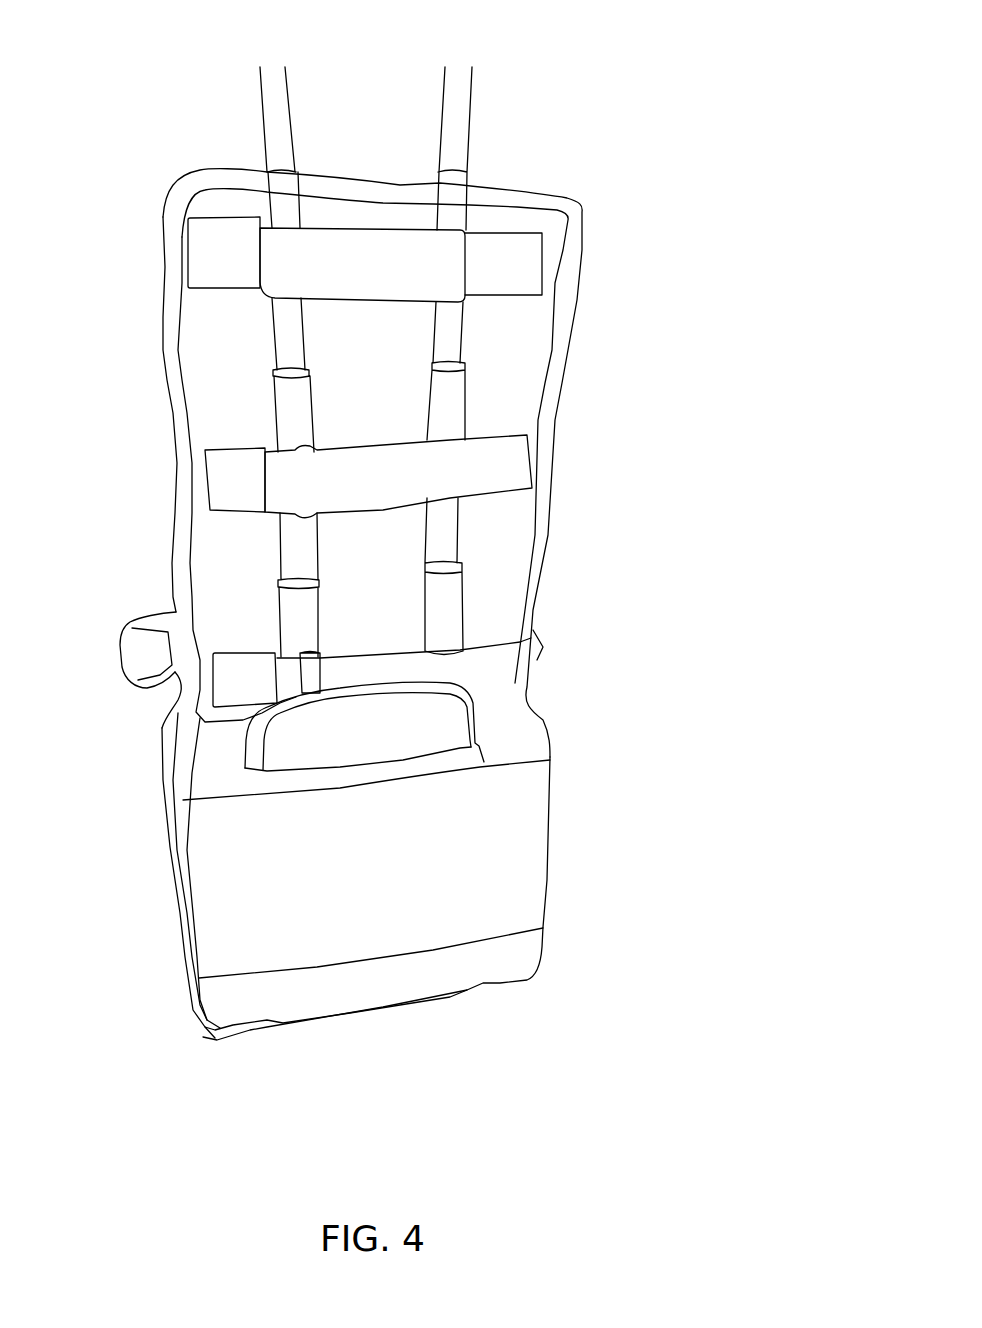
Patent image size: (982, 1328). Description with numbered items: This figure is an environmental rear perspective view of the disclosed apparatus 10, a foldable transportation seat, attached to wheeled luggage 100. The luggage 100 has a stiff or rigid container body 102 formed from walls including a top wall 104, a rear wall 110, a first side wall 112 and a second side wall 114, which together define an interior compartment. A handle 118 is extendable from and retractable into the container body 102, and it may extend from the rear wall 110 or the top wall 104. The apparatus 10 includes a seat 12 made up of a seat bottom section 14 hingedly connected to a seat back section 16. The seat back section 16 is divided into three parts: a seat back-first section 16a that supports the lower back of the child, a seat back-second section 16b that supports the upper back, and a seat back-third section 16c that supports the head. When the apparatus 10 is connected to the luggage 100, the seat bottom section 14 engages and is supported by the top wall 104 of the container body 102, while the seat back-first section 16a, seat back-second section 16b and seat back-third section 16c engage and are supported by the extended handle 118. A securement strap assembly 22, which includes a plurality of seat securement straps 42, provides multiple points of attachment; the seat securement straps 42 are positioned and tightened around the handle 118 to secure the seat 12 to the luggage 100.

The apparatus 10 is at (630, 230).
The seat 12 is at (173, 283).
The seat bottom section 14 is at (120, 627).
The seat back section 16 is at (177, 455).
The seat back-first section 16a is at (528, 608).
The seat back-second section 16b is at (553, 467).
The seat back-third section 16c is at (578, 280).
The securement strap assembly 22 is at (588, 395).
The seat securement straps 42 is at (343, 275).
The luggage 100 is at (663, 808).
The container body 102 is at (173, 843).
The top wall 104 is at (253, 793).
The rear wall 110 is at (378, 930).
The first side wall 112 is at (547, 885).
The second side wall 114 is at (193, 942).
The handle 118 is at (467, 109).